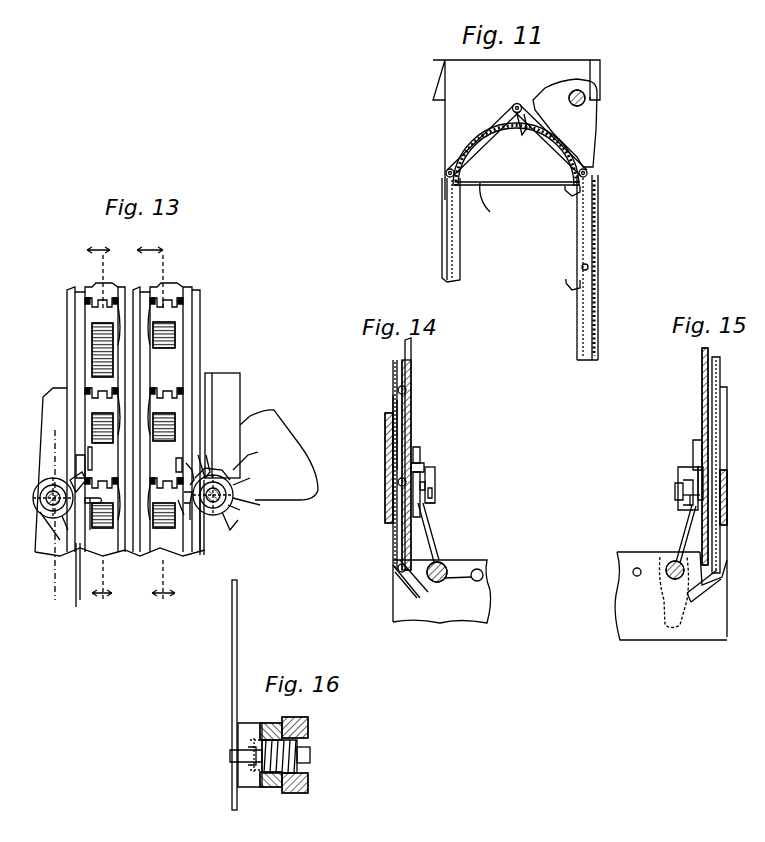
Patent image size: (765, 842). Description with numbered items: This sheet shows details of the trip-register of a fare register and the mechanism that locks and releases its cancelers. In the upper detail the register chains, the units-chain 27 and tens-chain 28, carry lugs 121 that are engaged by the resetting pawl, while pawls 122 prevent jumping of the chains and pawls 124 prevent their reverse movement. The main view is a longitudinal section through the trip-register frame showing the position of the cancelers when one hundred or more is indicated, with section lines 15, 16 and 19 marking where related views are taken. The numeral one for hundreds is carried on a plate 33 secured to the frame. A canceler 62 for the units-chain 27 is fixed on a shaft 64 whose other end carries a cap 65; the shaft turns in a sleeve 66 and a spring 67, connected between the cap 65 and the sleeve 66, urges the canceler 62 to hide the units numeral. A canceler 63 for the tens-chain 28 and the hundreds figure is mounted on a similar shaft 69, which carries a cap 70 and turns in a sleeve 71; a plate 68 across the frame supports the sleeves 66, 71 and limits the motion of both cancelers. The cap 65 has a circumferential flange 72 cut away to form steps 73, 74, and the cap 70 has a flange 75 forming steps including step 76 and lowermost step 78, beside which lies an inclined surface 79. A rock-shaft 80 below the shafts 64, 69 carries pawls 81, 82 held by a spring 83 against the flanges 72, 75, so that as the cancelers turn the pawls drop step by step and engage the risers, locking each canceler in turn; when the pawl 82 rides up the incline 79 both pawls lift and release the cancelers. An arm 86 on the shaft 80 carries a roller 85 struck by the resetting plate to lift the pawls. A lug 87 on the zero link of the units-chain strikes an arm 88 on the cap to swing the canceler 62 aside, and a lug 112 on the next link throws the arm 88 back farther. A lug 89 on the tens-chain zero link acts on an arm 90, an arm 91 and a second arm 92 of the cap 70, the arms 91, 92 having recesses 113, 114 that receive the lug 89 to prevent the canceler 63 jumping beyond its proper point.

In FIG. 13, the section line 15 is at (100, 422).
In FIG. 13, the section line 16 is at (59, 515).
In FIG. 13, the rail width dimension 19 is at (156, 422).
In FIG. 11, the units-chain 27 is at (443, 218).
In FIG. 13, the units-chain 27 is at (96, 417).
In FIG. 15, the units-chain 27 is at (721, 372).
In FIG. 13, the tens-chain 28 is at (120, 419).
In FIG. 14, the tens-chain 28 is at (400, 447).
In FIG. 13, the plate 33 is at (222, 425).
In FIG. 13, the canceler 62 is at (51, 470).
In FIG. 15, the canceler 62 is at (727, 425).
In FIG. 16, the canceler 62 is at (232, 642).
In FIG. 13, the canceler 63 is at (279, 455).
In FIG. 14, the canceler 63 is at (395, 466).
In FIG. 13, the shaft 64 is at (48, 500).
In FIG. 16, the shaft 64 is at (310, 751).
In FIG. 13, the cap 65 is at (41, 518).
In FIG. 15, the cap 65 is at (683, 497).
In FIG. 16, the cap 65 is at (308, 722).
In FIG. 16, the sleeve 66 is at (250, 726).
In FIG. 16, the spring 67 is at (266, 785).
In FIG. 14, the plate 68 is at (386, 509).
In FIG. 15, the plate 68 is at (727, 500).
In FIG. 13, the shaft 69 is at (232, 506).
In FIG. 14, the shaft 69 is at (436, 486).
In FIG. 15, the shaft 69 is at (675, 493).
In FIG. 13, the cap 70 is at (236, 487).
In FIG. 14, the cap 70 is at (435, 507).
In FIG. 14, the sleeve 71 is at (428, 480).
In FIG. 13, the circumferential flange 72 is at (43, 497).
In FIG. 15, the circumferential flange 72 is at (678, 470).
In FIG. 16, the circumferential flange 72 is at (308, 786).
In FIG. 13, the step 73 is at (86, 478).
In FIG. 13, the step 74 is at (66, 520).
In FIG. 13, the circumferential flange 75 is at (238, 497).
In FIG. 13, the step 76 is at (247, 456).
In FIG. 13, the step 78 is at (208, 518).
In FIG. 13, the inclined surface 79 is at (216, 513).
In FIG. 14, the rock-shaft 80 is at (444, 580).
In FIG. 15, the rock-shaft 80 is at (668, 578).
In FIG. 13, the pawl 81 is at (75, 585).
In FIG. 15, the pawl 81 is at (684, 535).
In FIG. 13, the pawl 82 is at (204, 550).
In FIG. 14, the pawl 82 is at (436, 537).
In FIG. 15, the pawl 82 is at (696, 443).
In FIG. 14, the spring 83 is at (450, 570).
In FIG. 15, the roller 85 is at (670, 630).
In FIG. 15, the arm 86 is at (625, 618).
In FIG. 13, the lug 87 is at (93, 462).
In FIG. 13, the arm 88 is at (76, 468).
In FIG. 15, the arm 88 is at (700, 470).
In FIG. 13, the lug 89 is at (176, 465).
In FIG. 14, the lug 89 is at (424, 466).
In FIG. 13, the arm 90 is at (212, 469).
In FIG. 14, the arm 90 is at (420, 452).
In FIG. 13, the arm 91 is at (188, 468).
In FIG. 14, the arm 91 is at (420, 478).
In FIG. 13, the second arm 92 is at (183, 516).
In FIG. 14, the second arm 92 is at (435, 493).
In FIG. 13, the lug 112 is at (92, 535).
In FIG. 15, the lug 112 is at (690, 500).
In FIG. 13, the recess 113 is at (204, 458).
In FIG. 13, the recess 114 is at (185, 497).
In FIG. 11, the lugs 121 is at (572, 282).
In FIG. 11, the pawls 122 is at (585, 123).
In FIG. 11, the pawls 124 is at (590, 178).